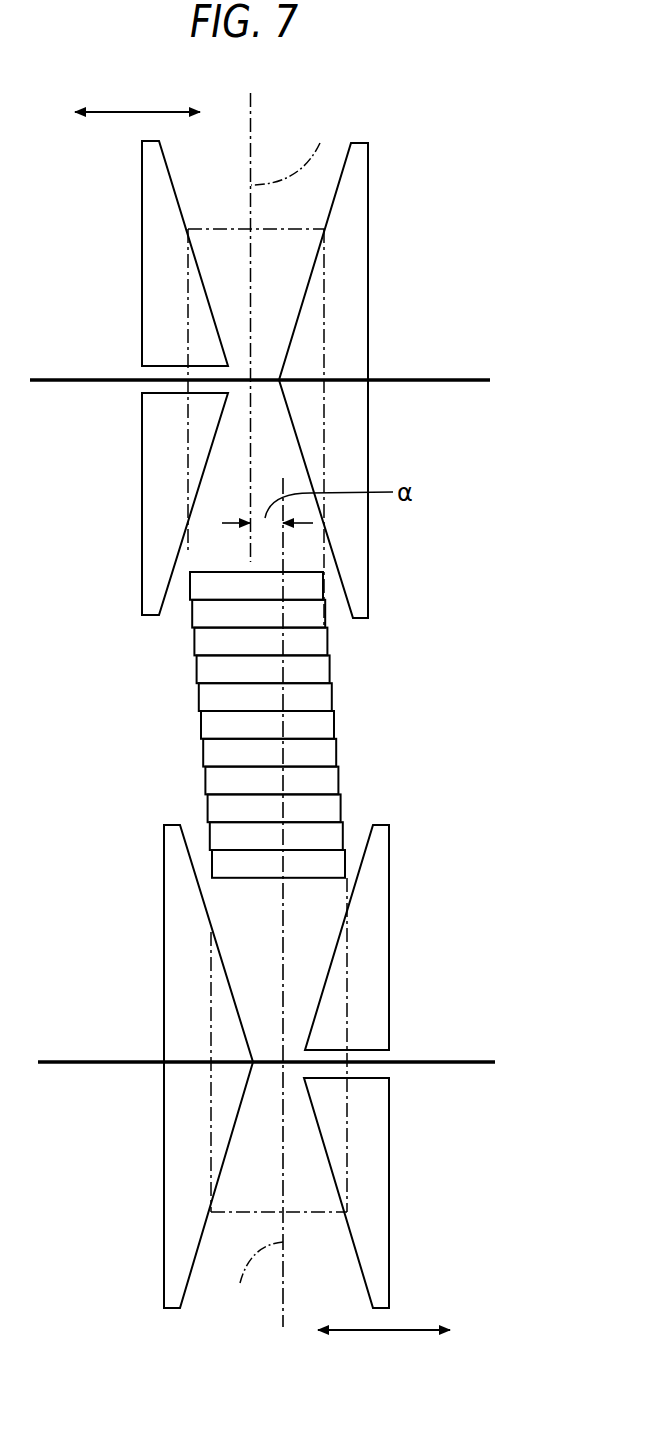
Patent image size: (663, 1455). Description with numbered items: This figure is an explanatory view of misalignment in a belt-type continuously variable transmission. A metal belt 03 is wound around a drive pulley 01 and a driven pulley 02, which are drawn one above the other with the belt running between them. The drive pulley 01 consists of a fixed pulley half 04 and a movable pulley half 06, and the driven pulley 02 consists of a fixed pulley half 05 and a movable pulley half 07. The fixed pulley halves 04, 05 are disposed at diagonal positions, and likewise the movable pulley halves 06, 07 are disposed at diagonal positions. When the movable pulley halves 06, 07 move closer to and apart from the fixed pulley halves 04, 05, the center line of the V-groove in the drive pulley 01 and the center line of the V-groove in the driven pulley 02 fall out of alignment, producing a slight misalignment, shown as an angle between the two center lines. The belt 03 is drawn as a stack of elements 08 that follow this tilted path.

The drive pulley 01 is at (260, 360).
The driven pulley 02 is at (266, 1077).
The metal belt 03 is at (212, 725).
The fixed pulley half 04 is at (347, 277).
The fixed pulley half 05 is at (185, 1152).
The movable pulley half 06 is at (163, 275).
The movable pulley half 07 is at (360, 1160).
The belt elements 08 is at (208, 638).